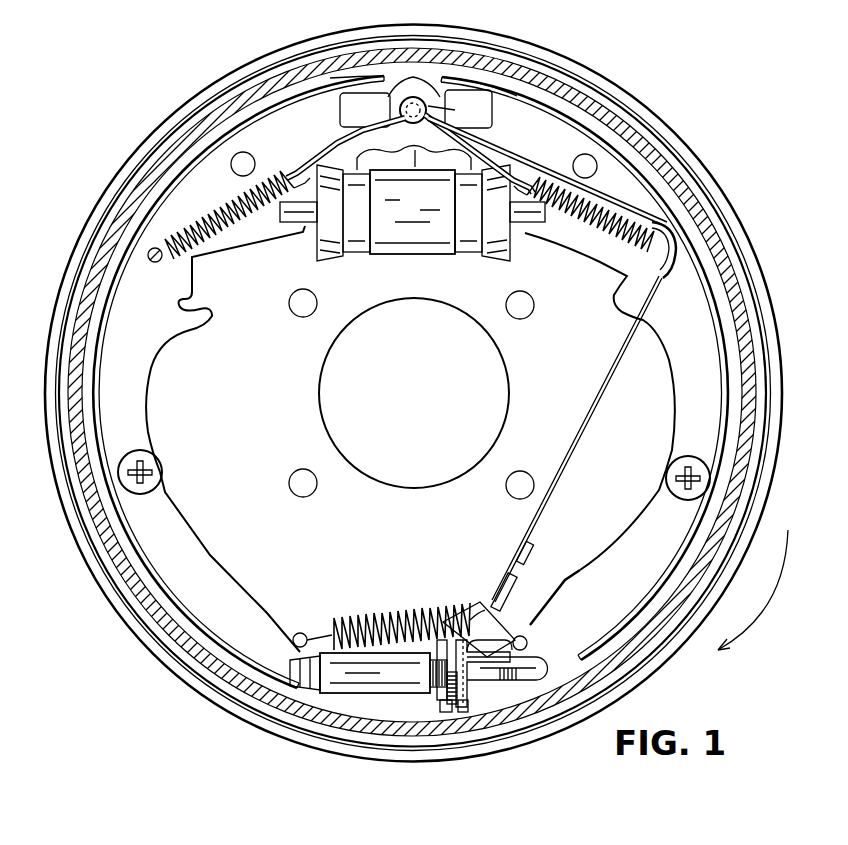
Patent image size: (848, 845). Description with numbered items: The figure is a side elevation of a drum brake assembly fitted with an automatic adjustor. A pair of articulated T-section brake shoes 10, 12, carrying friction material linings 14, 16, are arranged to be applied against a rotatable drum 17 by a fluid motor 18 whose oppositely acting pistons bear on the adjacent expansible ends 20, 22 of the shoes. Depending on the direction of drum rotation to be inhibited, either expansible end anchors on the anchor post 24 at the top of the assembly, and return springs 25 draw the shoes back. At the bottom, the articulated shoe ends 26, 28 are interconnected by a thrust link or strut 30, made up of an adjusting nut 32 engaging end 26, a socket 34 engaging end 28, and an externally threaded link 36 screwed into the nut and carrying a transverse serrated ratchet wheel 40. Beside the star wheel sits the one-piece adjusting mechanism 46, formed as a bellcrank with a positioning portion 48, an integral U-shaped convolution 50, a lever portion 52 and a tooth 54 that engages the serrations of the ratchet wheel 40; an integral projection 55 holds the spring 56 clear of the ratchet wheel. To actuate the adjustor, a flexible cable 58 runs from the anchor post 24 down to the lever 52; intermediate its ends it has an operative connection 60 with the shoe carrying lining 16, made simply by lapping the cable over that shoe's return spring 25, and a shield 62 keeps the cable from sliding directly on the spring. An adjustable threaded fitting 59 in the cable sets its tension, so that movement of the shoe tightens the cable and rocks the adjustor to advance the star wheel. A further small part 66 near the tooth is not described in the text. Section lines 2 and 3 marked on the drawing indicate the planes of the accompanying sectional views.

The brake shoe 10 is at (142, 406).
The brake shoe 12 is at (687, 415).
The friction material lining 14 is at (113, 263).
The friction material lining 16 is at (710, 272).
The rotatable drum 17 is at (120, 560).
The fluid motor 18 is at (412, 240).
The expansible end 20 is at (313, 110).
The expansible end 22 is at (510, 113).
The anchor post 24 is at (418, 100).
The return springs 25 is at (237, 226).
The articulated shoe end 26 is at (267, 613).
The articulated shoe end 28 is at (532, 590).
The thrust link or strut 30 is at (390, 700).
The adjusting nut 32 is at (360, 683).
The socket 34 is at (473, 707).
The externally threaded link 36 is at (440, 693).
The ratchet wheel 40 is at (450, 707).
The one-piece adjusting mechanism 46 is at (483, 614).
The positioning portion 48 is at (465, 712).
The U-shaped convolution 50 is at (545, 695).
The lever portion 52 is at (510, 623).
The tooth 54 is at (445, 700).
The integral projection 55 is at (448, 622).
The spring 56 is at (368, 627).
The flexible cable 58 is at (586, 418).
The adjustable threaded fitting 59 is at (523, 553).
The operative connection 60 is at (670, 230).
The shield 62 is at (637, 213).
The pawl stop 66 is at (462, 712).
The section line 2- 2 is at (432, 12).
The section line 3- 3 is at (282, 680).